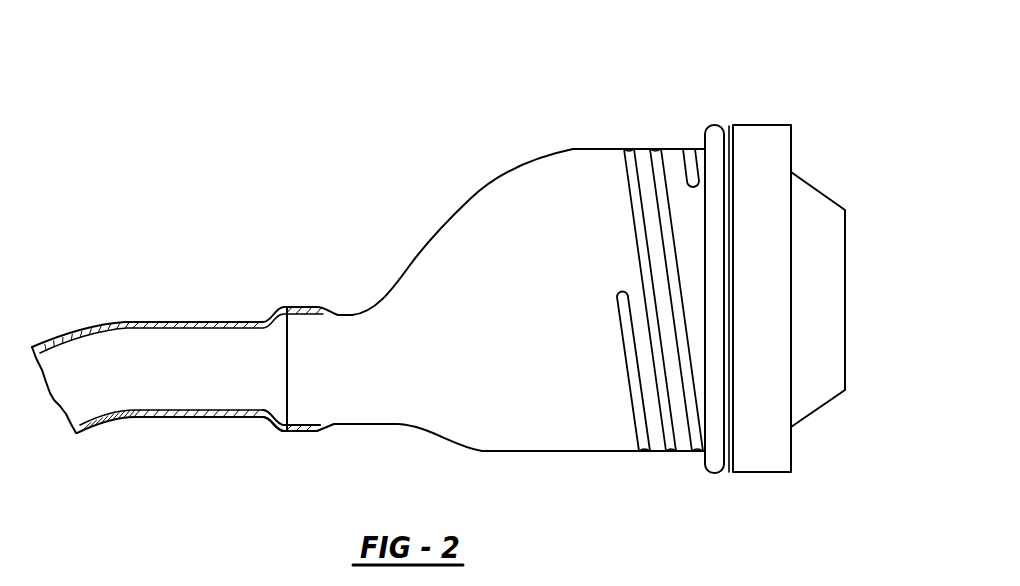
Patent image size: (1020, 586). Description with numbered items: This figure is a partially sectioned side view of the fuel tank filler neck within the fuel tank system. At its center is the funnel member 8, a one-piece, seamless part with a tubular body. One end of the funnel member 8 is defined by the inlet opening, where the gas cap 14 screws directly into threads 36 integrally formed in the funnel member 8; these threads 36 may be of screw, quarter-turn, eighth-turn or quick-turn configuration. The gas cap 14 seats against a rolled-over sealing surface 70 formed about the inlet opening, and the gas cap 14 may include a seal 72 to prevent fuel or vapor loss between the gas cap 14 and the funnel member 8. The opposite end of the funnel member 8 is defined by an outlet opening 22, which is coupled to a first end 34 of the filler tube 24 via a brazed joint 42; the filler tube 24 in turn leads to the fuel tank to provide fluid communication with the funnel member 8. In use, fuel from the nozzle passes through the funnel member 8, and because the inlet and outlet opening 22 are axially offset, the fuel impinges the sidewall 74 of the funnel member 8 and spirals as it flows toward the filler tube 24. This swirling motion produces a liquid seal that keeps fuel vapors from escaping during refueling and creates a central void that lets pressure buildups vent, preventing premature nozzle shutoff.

The funnel member 8 is at (553, 458).
The gas cap 14 is at (813, 205).
The outlet opening 22 is at (300, 372).
The filler tube 24 is at (152, 424).
The first end 34 is at (305, 431).
The threads 36 is at (669, 451).
The brazed joint 42 is at (333, 427).
The rolled-over sealing surface 70 is at (711, 127).
The seal 72 is at (728, 127).
The sidewall 74 is at (484, 193).